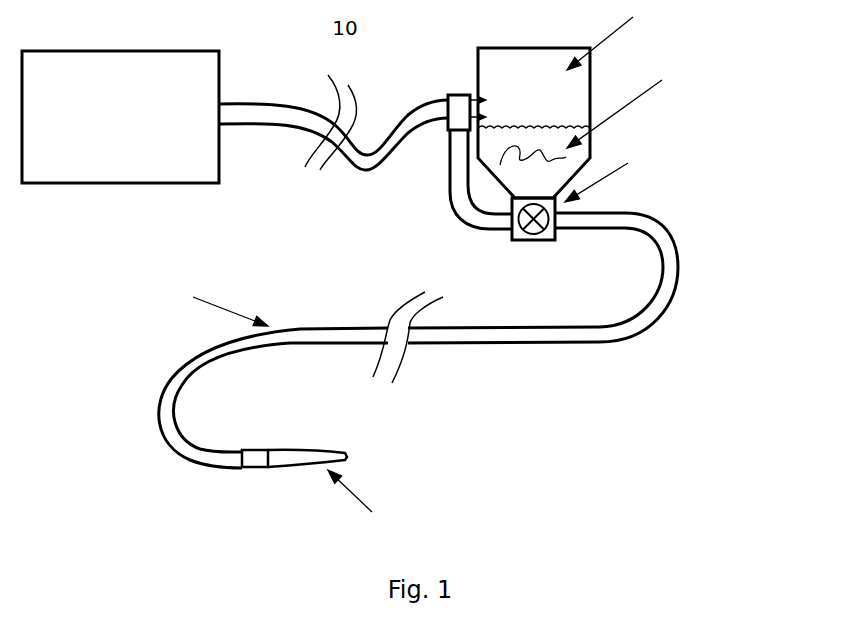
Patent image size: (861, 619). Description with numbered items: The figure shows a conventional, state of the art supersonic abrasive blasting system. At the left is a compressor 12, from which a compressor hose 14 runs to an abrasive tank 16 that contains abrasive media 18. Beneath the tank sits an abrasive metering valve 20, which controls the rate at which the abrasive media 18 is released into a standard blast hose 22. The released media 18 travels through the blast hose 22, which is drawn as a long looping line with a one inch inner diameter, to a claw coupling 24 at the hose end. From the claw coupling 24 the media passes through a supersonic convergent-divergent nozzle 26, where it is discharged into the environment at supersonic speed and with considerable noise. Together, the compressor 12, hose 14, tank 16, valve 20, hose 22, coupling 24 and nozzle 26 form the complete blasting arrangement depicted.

The compressor 12 is at (120, 131).
The compressor hose 14 is at (365, 152).
The abrasive tank 16 is at (652, 104).
The abrasive media 18 is at (623, 118).
The abrasive metering valve 20 is at (639, 199).
The blast hose 22 is at (394, 340).
The claw coupling 24 is at (252, 479).
The supersonic convergent-divergent nozzle 26 is at (386, 488).